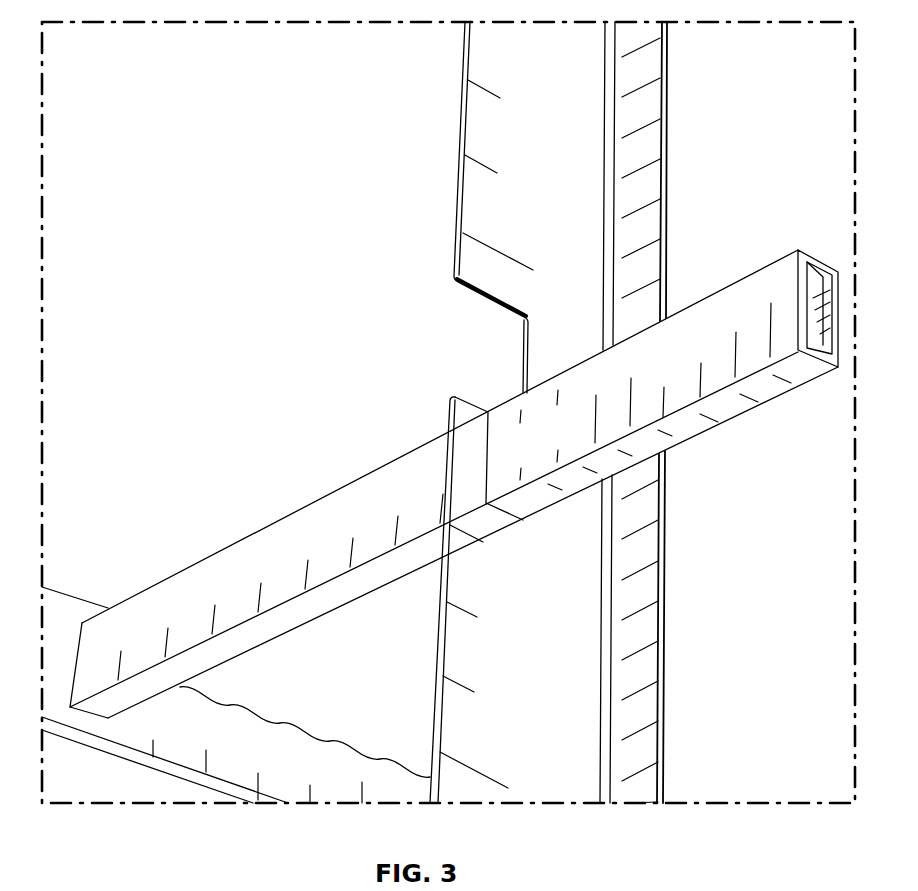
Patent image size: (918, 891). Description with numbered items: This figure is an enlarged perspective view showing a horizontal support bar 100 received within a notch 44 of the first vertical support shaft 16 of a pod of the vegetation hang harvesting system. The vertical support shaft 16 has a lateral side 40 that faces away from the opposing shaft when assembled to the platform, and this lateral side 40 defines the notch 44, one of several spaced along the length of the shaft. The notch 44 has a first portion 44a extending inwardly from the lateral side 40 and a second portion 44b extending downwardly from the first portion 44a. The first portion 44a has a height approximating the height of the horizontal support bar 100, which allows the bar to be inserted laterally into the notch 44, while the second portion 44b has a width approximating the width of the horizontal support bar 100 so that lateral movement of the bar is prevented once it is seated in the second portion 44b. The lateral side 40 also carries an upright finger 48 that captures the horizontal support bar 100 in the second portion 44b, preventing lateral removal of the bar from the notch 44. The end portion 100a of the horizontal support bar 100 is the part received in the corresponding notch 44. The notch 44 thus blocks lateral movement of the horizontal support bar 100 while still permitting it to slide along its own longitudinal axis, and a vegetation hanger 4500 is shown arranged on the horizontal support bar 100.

The first vertical support shaft 16 is at (450, 71).
The lateral side 40 is at (460, 170).
The notch 44 is at (440, 314).
The first portion 44a is at (478, 364).
The second portion 44b is at (476, 452).
The upright finger 48 is at (468, 488).
The horizontal support bar 100 is at (298, 528).
The end portion 100a is at (742, 290).
The vegetation hanger 4500 is at (78, 580).